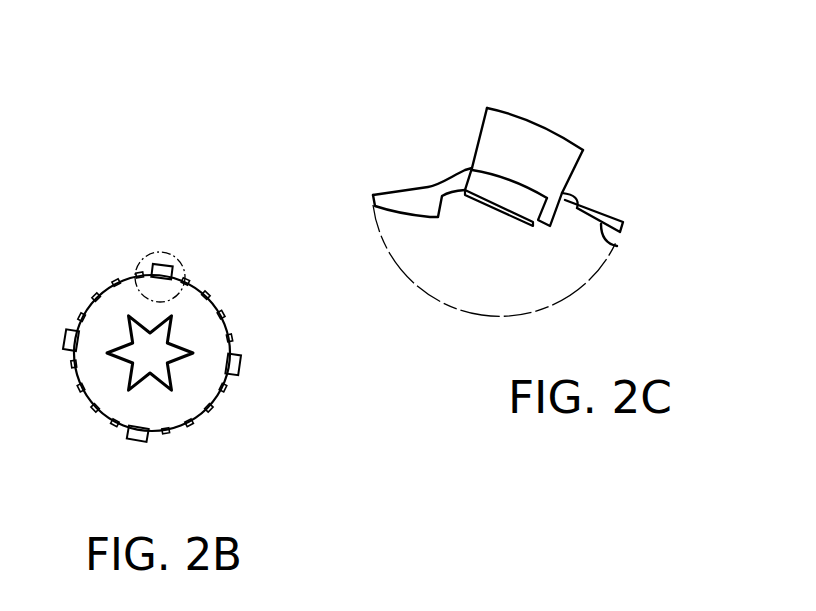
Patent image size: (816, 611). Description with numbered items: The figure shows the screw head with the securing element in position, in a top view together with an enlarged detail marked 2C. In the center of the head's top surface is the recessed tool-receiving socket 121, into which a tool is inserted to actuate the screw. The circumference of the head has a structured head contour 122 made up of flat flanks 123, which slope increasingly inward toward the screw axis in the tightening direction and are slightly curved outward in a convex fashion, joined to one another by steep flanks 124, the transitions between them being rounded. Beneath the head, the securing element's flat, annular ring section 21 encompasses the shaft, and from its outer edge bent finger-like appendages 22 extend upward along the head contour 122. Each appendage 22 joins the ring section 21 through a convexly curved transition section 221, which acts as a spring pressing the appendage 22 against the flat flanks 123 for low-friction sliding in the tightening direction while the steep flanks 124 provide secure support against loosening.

In FIG. 2C, the ring section 21 is at (400, 200).
In FIG. 2C, the finger-like appendages 22 is at (478, 132).
In FIG. 2C, the transition section 221 is at (555, 130).
In FIG. 2B, the tool-receiving socket 121 is at (162, 338).
In FIG. 2B, the head contour 122 is at (188, 423).
In FIG. 2C, the head contour 122 is at (543, 230).
In FIG. 2C, the flat flanks 123 is at (603, 230).
In FIG. 2C, the steep flanks 124 is at (583, 210).
In FIG. 2B, the detail region shown in FIG. 2C is at (177, 256).